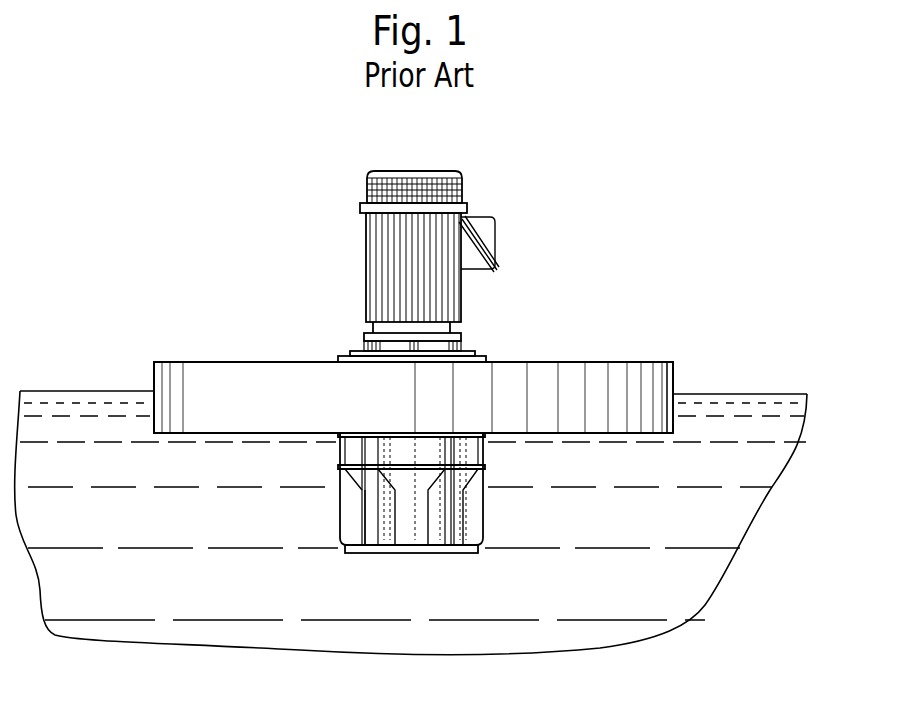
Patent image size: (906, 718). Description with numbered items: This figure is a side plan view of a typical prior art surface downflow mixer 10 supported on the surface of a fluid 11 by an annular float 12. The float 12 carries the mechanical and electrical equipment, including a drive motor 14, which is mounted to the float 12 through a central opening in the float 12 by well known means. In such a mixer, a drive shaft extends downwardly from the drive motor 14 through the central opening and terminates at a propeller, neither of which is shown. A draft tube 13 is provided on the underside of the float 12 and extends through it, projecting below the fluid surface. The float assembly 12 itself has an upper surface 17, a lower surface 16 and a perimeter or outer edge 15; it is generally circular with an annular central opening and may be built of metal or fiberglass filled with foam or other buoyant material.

The surface downflow mixer 10 is at (433, 430).
The fluid 11 is at (735, 394).
The annular float 12 is at (212, 387).
The draft tube 13 is at (486, 512).
The drive motor 14 is at (462, 218).
The outer edge 15 is at (673, 373).
The lower surface 16 is at (332, 440).
The upper surface 17 is at (549, 358).